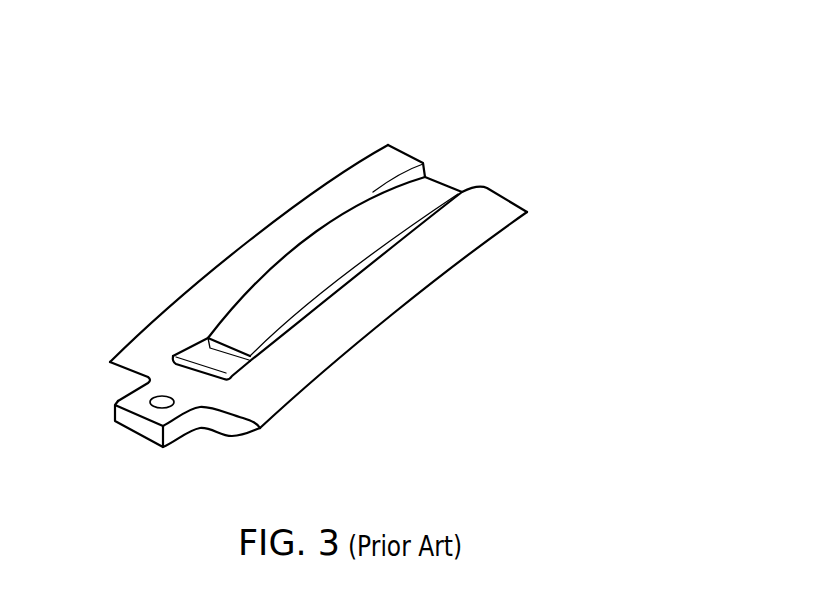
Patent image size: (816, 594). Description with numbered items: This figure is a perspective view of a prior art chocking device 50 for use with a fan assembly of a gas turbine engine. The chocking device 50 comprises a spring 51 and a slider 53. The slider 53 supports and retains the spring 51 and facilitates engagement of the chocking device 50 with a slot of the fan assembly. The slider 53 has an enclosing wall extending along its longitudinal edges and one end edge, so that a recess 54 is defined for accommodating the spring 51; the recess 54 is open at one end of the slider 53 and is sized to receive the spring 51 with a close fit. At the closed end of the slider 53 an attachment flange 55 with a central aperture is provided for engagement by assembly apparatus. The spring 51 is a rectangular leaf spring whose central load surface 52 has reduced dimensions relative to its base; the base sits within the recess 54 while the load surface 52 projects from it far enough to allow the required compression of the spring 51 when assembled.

The chocking device 50 is at (568, 128).
The spring 51 is at (248, 313).
The load surface 52 is at (353, 240).
The slider 53 is at (273, 378).
The recess 54 is at (202, 360).
The attachment flange 55 is at (115, 423).